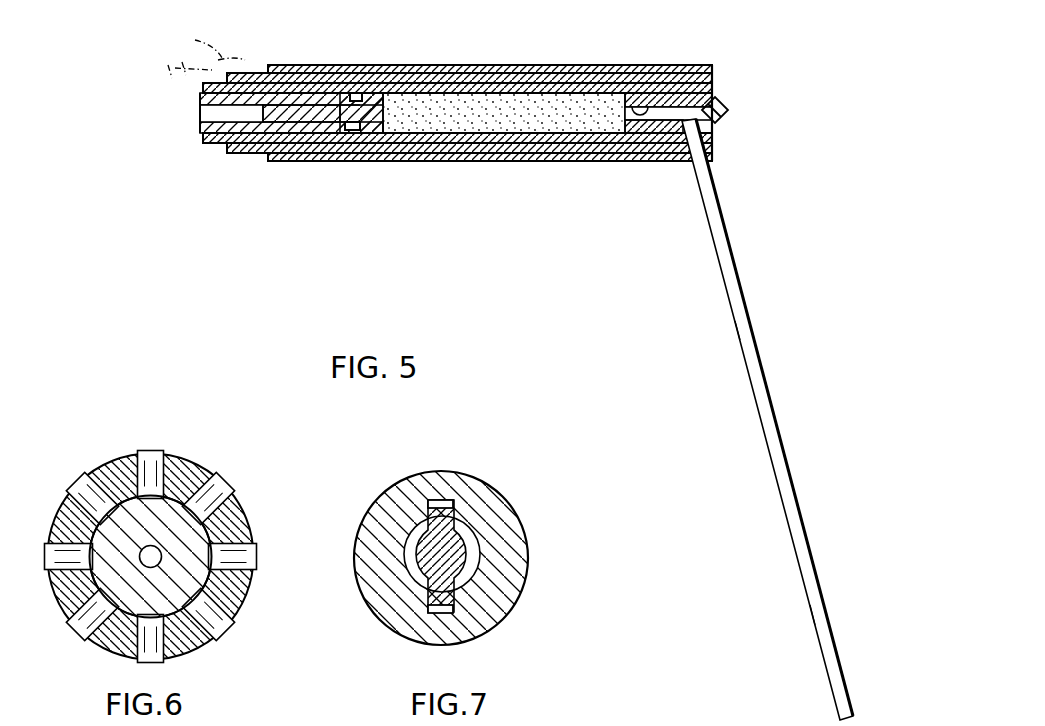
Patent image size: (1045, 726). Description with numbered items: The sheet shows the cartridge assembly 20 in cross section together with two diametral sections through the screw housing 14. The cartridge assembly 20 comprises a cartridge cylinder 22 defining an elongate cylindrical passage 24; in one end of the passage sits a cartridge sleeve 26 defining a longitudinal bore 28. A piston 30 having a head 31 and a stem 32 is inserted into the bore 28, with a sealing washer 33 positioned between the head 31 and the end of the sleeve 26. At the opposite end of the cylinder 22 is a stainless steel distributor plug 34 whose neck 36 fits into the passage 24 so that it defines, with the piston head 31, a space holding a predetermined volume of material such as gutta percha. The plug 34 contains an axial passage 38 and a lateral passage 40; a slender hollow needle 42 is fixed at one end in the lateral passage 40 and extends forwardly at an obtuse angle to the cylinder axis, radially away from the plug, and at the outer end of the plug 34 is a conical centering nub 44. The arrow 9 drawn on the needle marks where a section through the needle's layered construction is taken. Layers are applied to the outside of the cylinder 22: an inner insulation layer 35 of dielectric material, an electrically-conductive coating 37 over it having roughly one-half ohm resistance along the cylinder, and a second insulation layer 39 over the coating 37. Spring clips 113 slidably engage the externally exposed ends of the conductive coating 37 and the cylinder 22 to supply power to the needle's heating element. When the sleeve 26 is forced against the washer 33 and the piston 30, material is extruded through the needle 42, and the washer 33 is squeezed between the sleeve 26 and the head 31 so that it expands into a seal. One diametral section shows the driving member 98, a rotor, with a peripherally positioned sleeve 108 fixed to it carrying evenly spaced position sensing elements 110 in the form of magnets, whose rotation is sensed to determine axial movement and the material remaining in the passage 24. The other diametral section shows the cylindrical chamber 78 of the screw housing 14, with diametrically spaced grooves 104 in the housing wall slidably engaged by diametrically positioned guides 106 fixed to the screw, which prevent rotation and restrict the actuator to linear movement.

In FIG. 5, the handle pivot direction arrow 9 is at (864, 660).
In FIG. 7, the screw housing 14 is at (478, 471).
In FIG. 5, the cartridge assembly 20 is at (366, 178).
In FIG. 5, the cartridge cylinder 22 is at (410, 90).
In FIG. 5, the elongate cylindrical passage 24 is at (517, 125).
In FIG. 5, the cartridge sleeve 26 is at (222, 127).
In FIG. 5, the longitudinal bore 28 is at (205, 110).
In FIG. 5, the piston 30 is at (305, 118).
In FIG. 5, the piston head 31 is at (387, 120).
In FIG. 5, the stem 32 is at (298, 113).
In FIG. 5, the sealing washer 33 is at (357, 92).
In FIG. 5, the distributor plug 34 is at (718, 92).
In FIG. 5, the inner insulation layer 35 is at (305, 80).
In FIG. 5, the neck 36 is at (647, 130).
In FIG. 5, the electrically-conductive coating 37 is at (268, 63).
In FIG. 5, the axial passage 38 is at (640, 95).
In FIG. 5, the second insulation layer 39 is at (295, 66).
In FIG. 5, the lateral passage 40 is at (703, 162).
In FIG. 5, the needle 42 is at (738, 333).
In FIG. 5, the conical centering nub 44 is at (724, 106).
In FIG. 7, the cylindrical chamber 78 is at (480, 552).
In FIG. 6, the driving member 98 is at (167, 607).
In FIG. 7, the grooves 104 is at (438, 600).
In FIG. 7, the guides 106 is at (452, 608).
In FIG. 6, the sleeve 108 is at (233, 590).
In FIG. 6, the position sensing elements 110 is at (240, 550).
In FIG. 5, the spring clips 113 is at (206, 46).